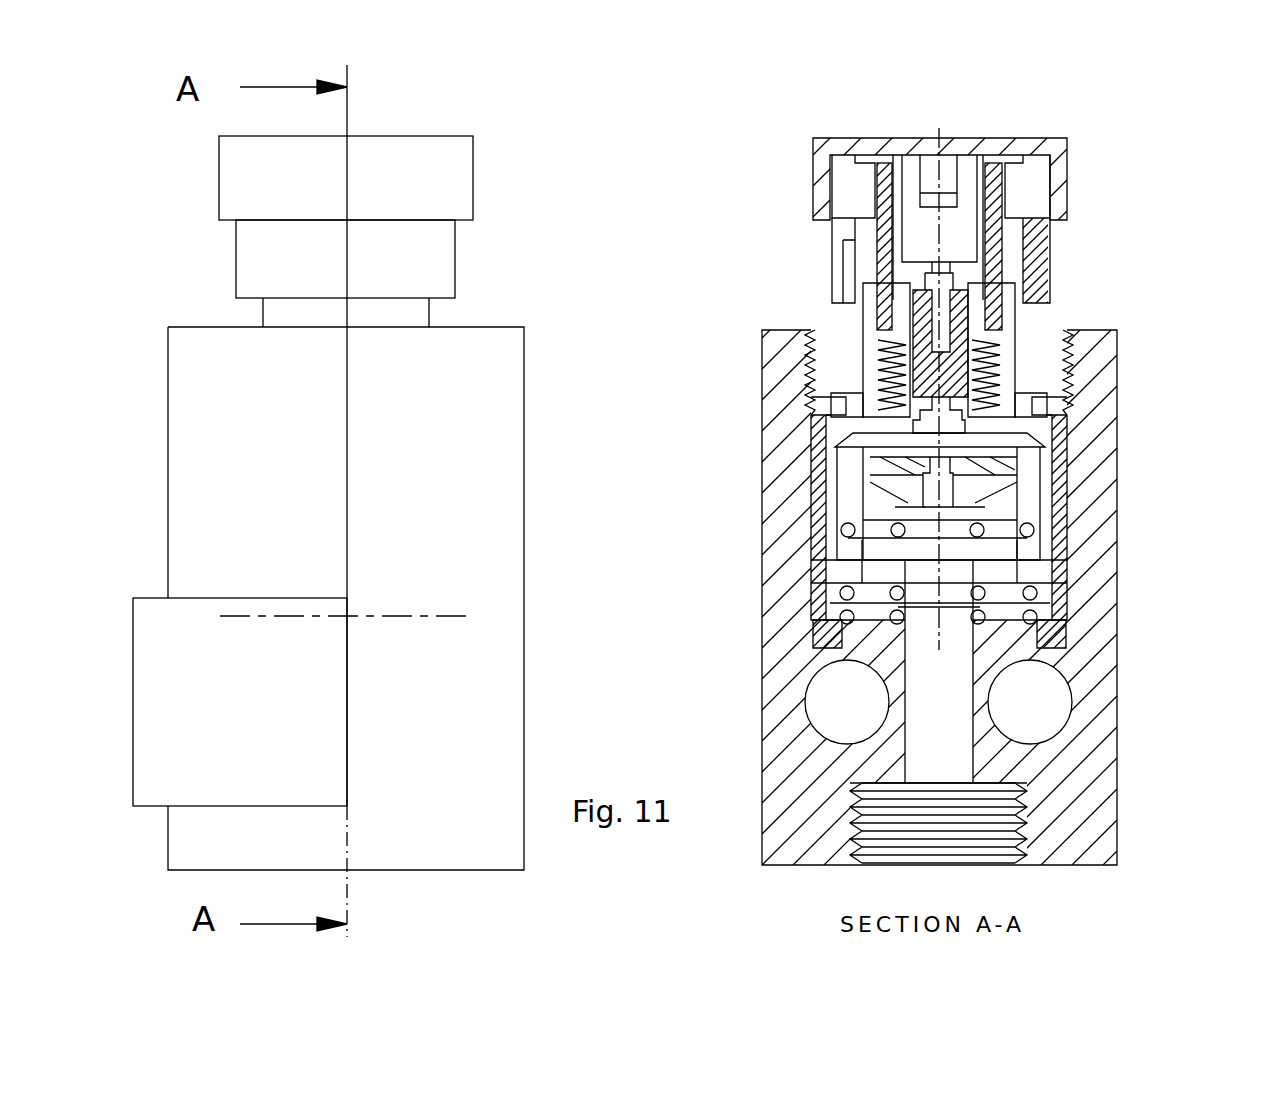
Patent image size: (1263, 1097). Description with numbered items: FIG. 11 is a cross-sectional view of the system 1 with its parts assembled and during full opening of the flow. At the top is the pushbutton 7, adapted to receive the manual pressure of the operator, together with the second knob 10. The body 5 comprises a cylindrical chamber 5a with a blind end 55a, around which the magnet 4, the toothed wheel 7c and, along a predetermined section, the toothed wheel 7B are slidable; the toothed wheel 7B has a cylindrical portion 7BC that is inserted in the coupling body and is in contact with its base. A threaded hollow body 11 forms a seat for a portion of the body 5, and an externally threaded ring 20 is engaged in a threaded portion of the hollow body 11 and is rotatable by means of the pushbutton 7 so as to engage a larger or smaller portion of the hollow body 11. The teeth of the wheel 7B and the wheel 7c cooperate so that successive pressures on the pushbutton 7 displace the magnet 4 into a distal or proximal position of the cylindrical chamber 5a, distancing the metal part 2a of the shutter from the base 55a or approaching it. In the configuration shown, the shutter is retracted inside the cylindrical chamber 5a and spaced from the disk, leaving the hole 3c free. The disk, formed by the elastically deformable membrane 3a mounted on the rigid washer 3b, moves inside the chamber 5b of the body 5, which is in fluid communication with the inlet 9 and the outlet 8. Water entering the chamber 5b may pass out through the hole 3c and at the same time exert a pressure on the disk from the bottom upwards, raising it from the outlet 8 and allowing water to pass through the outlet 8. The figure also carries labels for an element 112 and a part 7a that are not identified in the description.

The system 1 is at (680, 178).
The cap insert 112 is at (885, 165).
The cylindrical portion 7BC is at (888, 175).
The externally threaded ring 20 is at (870, 255).
The blind end 55a is at (900, 275).
The metal part 2a is at (918, 327).
The pushbutton 7 is at (1065, 175).
The toothed wheel 7B is at (985, 250).
The second knob 10 is at (1049, 268).
The toothed wheel 7c is at (990, 300).
The cylindrical chamber 5a is at (982, 340).
The magnet 4 is at (1015, 368).
The threaded hollow body 11 is at (1015, 398).
The body 5 is at (1040, 435).
The elastically deformable membrane 3a is at (1042, 462).
The cartridge sleeve 7a is at (1058, 532).
The chamber 5b is at (842, 432).
The rigid washer 3b is at (842, 459).
The hole 3c is at (937, 505).
The inlet 9 is at (868, 633).
The outlet 8 is at (962, 755).